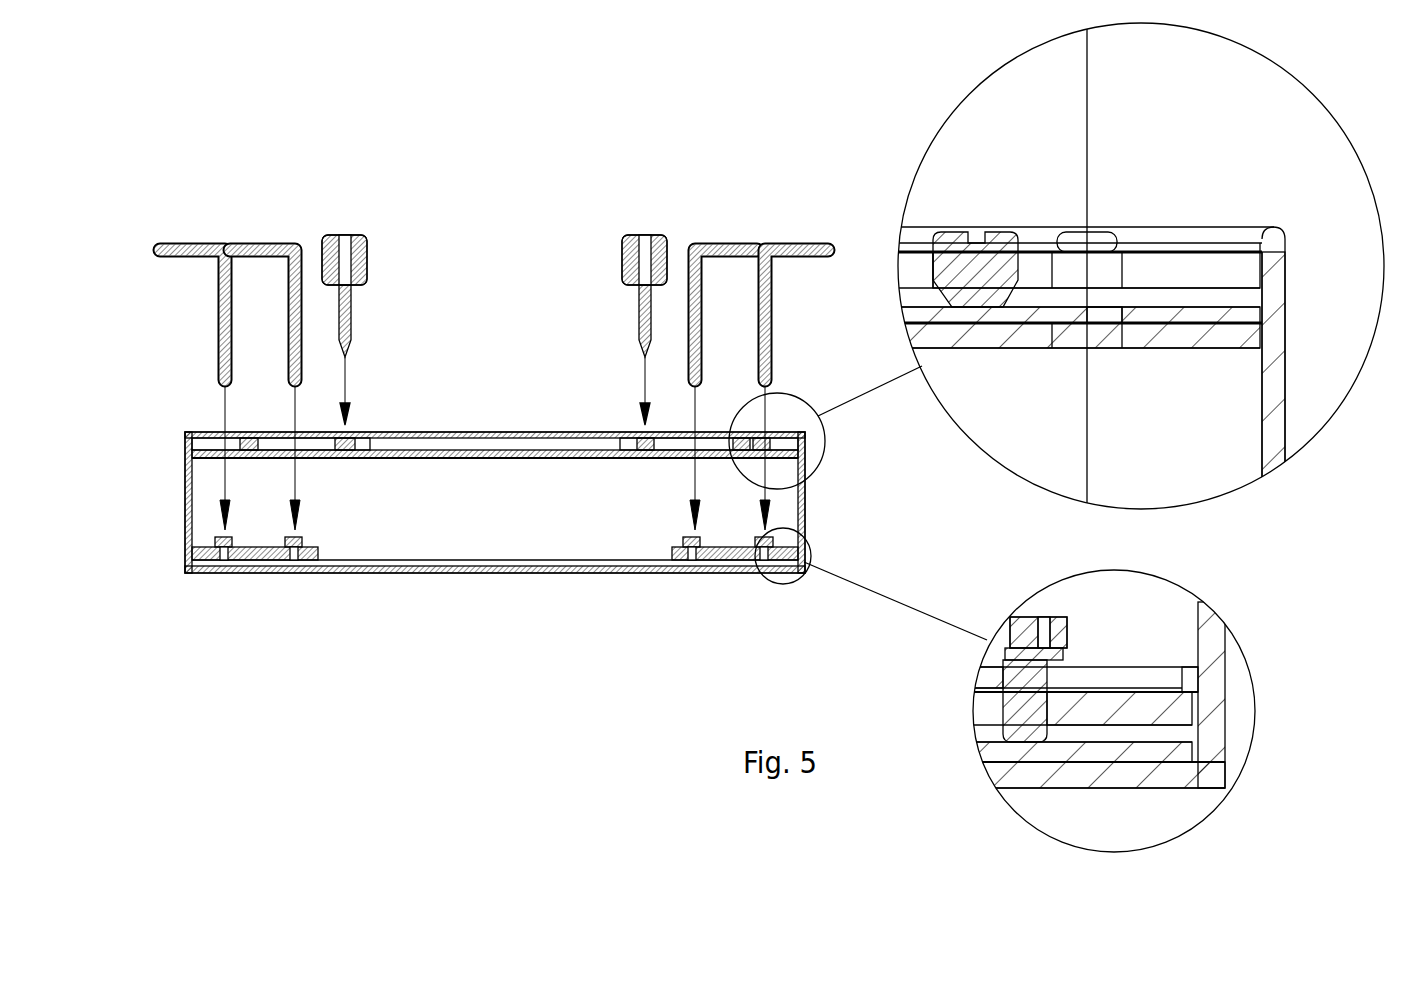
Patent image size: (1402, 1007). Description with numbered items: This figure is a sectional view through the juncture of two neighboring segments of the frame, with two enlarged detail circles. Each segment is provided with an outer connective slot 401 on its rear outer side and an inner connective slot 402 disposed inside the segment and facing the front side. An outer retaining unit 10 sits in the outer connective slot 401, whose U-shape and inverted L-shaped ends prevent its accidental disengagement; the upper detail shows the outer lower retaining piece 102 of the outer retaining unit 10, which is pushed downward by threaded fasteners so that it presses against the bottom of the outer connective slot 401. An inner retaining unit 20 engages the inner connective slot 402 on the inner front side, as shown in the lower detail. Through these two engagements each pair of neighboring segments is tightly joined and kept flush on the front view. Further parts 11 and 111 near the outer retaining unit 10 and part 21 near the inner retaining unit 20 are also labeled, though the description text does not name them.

The outer retaining unit 10 is at (1247, 264).
The outer lower retaining piece 102 is at (1100, 262).
The first insulating layer 11 is at (1258, 318).
The through hole 111 is at (1098, 310).
The inner retaining unit 20 is at (1228, 718).
The second insulating layer 21 is at (1226, 760).
The outer connective slot 401 is at (455, 440).
The inner connective slot 402 is at (462, 565).